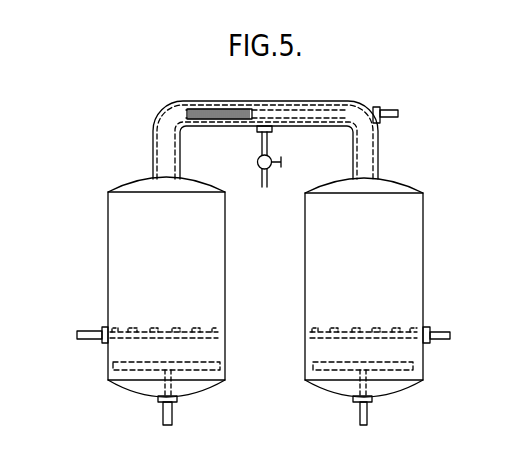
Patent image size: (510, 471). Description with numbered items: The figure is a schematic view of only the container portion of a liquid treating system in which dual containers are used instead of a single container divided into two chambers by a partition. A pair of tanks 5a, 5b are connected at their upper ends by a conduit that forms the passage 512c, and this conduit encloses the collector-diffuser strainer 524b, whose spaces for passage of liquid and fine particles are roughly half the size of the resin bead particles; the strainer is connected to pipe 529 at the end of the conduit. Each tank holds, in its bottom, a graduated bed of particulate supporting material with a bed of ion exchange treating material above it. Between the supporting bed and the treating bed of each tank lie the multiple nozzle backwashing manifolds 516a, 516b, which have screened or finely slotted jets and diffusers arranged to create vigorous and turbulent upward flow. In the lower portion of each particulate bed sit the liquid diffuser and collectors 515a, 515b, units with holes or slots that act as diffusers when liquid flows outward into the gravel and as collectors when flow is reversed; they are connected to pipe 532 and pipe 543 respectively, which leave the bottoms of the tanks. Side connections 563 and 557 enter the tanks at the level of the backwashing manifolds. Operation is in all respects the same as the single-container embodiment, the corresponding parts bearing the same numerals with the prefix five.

The tank 5a is at (188, 273).
The tank 5b is at (380, 273).
The passage 512c is at (291, 127).
The collector-diffuser strainer 524b is at (225, 82).
The pipe 529 is at (389, 108).
The multiple nozzle backwashing manifold 516a is at (190, 313).
The multiple nozzle backwashing manifold 516b is at (385, 308).
The liquid diffuser and collector 515a is at (113, 364).
The liquid diffuser and collector 515b is at (413, 366).
The inlet of first tank 563 is at (92, 330).
The inlet of second tank 557 is at (451, 332).
The pipe 532 is at (162, 421).
The pipe 543 is at (360, 422).